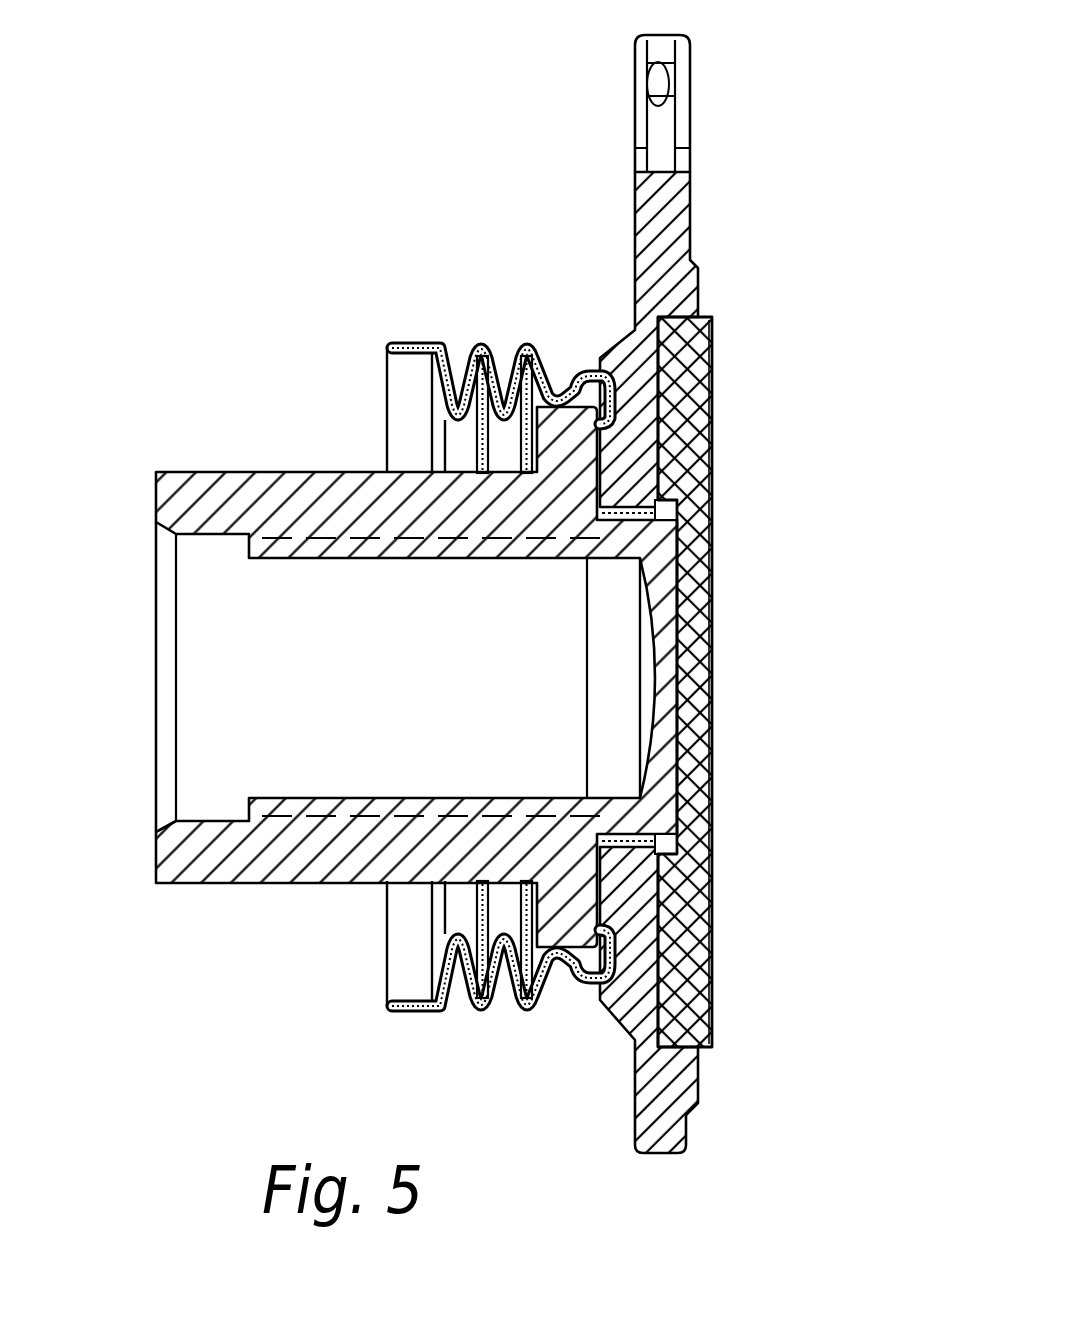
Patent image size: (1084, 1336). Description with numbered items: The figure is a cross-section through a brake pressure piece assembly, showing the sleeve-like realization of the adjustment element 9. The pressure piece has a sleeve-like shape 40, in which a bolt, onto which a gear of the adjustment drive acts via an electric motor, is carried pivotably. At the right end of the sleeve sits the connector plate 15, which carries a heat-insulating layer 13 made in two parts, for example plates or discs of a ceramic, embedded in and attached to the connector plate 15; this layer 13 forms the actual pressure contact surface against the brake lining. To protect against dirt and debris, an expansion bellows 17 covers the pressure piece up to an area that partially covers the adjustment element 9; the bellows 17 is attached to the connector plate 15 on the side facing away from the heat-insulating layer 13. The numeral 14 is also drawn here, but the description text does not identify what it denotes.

The adjustment element 9 is at (383, 108).
The heat-insulating layer 13 is at (708, 473).
The housing 14 is at (748, 307).
The connector plate 15 is at (690, 200).
The expansion bellows 17 is at (415, 343).
The sleeve-like shape 40 is at (231, 497).